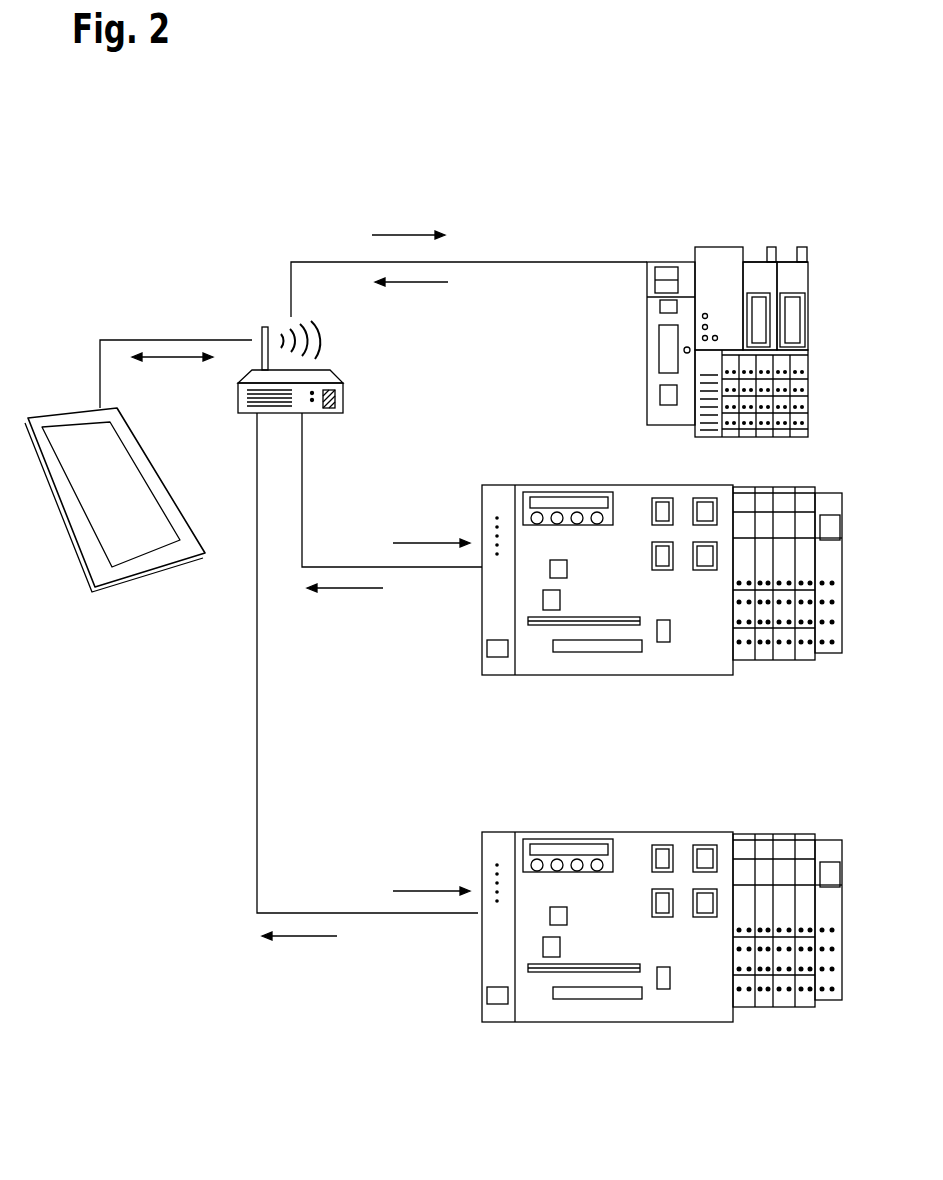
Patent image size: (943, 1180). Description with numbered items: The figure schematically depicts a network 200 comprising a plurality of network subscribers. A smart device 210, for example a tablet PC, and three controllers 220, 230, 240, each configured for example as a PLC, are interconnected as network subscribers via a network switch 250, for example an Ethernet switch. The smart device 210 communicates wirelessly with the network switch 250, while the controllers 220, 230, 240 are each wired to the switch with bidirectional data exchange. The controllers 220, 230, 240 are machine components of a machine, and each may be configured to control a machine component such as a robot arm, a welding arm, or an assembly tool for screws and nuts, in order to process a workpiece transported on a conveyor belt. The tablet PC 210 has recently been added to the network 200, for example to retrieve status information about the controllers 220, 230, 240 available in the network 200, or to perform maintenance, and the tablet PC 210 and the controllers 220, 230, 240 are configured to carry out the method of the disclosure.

The network 200 is at (123, 883).
The smart device 210 is at (120, 587).
The controller 220 is at (647, 338).
The controller 230 is at (697, 677).
The controller 240 is at (697, 1024).
The network switch 250 is at (345, 397).